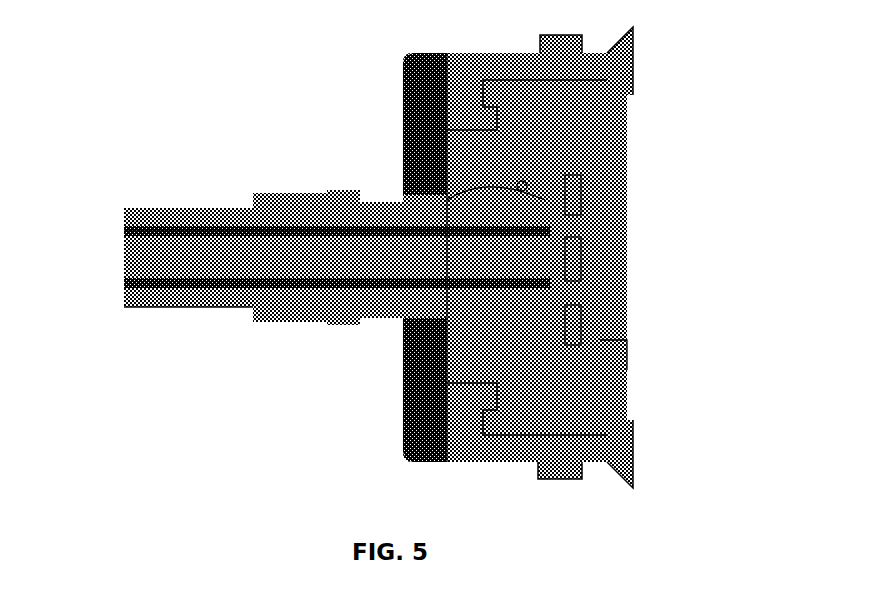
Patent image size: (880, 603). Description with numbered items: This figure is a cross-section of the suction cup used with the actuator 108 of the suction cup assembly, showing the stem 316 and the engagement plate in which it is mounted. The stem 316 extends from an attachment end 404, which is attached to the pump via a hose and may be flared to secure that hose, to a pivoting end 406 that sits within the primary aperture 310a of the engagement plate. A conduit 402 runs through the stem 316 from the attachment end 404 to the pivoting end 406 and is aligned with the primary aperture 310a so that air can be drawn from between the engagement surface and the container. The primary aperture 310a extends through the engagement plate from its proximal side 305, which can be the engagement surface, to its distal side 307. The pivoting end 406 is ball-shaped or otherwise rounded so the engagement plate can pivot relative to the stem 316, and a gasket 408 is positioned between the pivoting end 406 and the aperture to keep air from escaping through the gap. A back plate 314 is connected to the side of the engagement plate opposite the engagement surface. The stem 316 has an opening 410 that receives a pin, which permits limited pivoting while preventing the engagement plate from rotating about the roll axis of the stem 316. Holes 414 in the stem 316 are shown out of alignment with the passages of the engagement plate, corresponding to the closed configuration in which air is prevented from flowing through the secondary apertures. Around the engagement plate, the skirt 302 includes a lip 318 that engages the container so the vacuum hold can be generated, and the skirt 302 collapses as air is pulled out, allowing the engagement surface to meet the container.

The actuator 108 is at (630, 92).
The skirt 302 is at (557, 50).
The proximal side 305 is at (608, 420).
The distal side 307 is at (445, 163).
The primary aperture 310a is at (628, 355).
The back plate 314 is at (420, 422).
The stem 316 is at (125, 214).
The lip 318 is at (636, 40).
The conduit 402 is at (137, 257).
The attachment end 404 is at (123, 307).
The pivoting end 406 is at (470, 312).
The gasket 408 is at (522, 186).
The opening 410 is at (487, 258).
The holes 414 is at (577, 200).